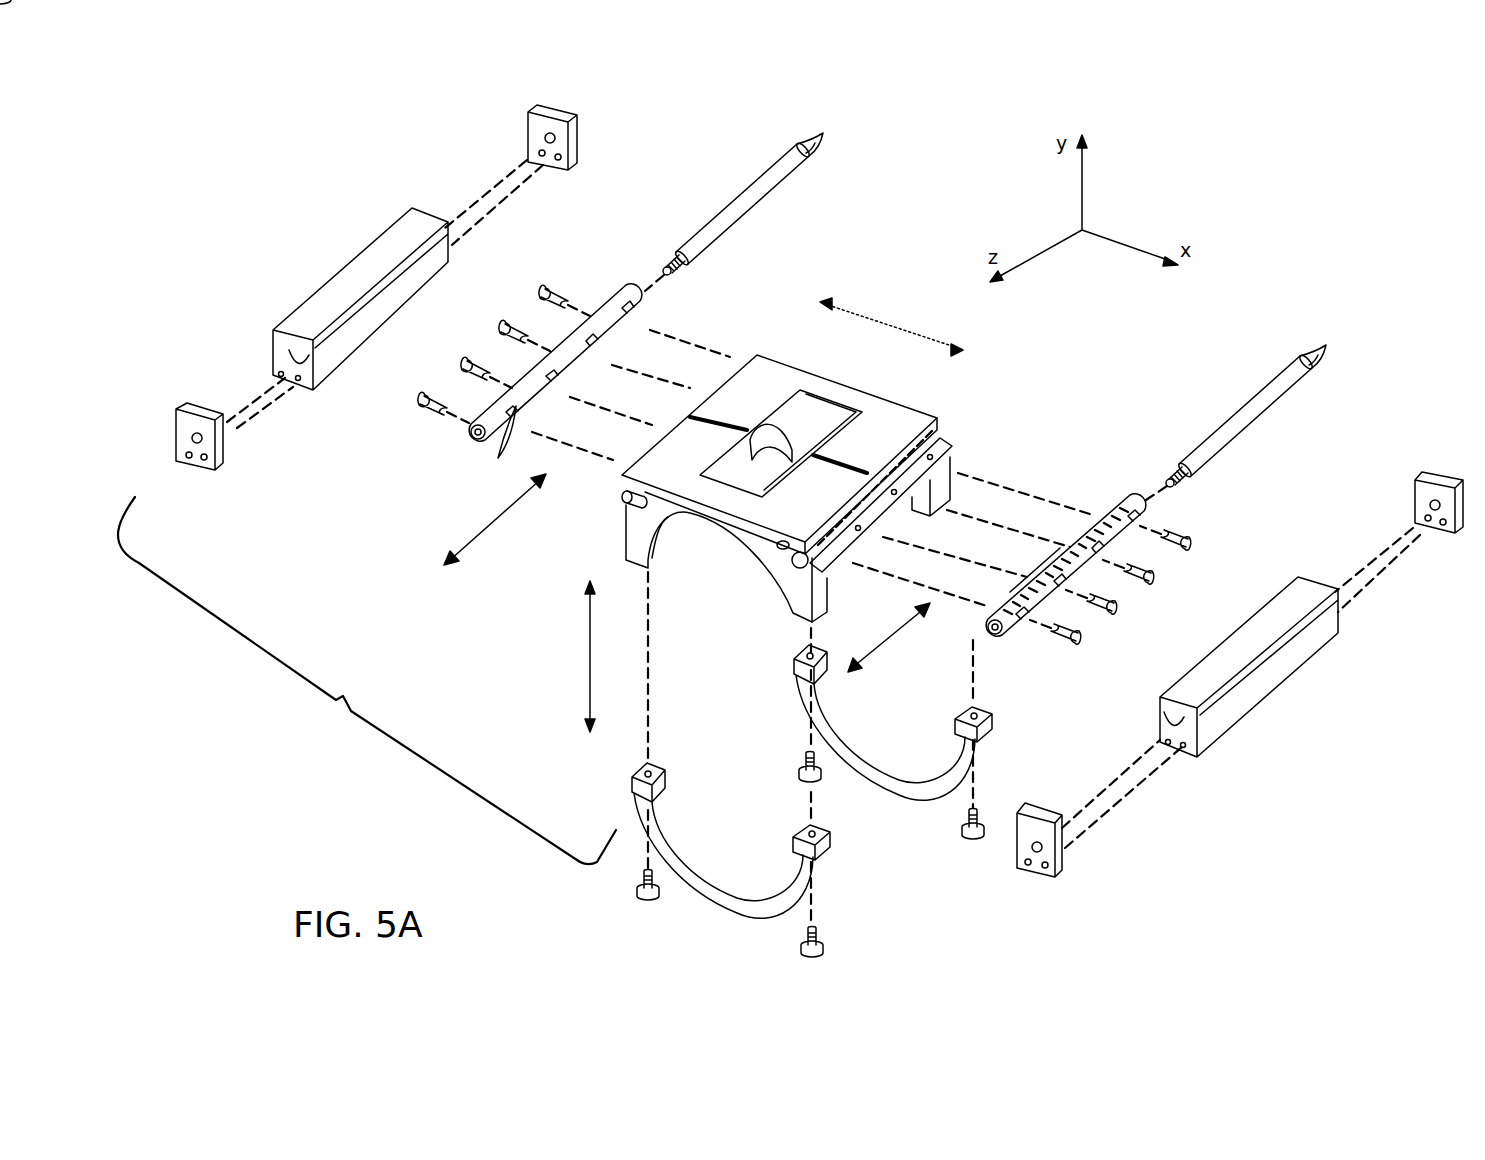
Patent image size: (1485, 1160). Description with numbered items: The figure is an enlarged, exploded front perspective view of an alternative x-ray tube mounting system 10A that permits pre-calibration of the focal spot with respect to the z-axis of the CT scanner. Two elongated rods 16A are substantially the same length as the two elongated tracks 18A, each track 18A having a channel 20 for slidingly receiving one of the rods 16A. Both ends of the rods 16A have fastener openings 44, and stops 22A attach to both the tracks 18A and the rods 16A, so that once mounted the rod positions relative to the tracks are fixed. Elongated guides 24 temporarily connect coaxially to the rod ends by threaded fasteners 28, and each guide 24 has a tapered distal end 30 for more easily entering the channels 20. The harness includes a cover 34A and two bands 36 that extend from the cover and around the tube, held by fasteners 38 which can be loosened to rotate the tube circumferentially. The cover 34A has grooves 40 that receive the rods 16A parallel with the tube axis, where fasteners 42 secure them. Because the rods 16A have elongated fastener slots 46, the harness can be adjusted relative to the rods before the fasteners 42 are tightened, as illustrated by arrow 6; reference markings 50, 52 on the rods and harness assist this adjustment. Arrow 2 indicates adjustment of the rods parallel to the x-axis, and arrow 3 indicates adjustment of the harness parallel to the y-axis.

The mounting system 10A is at (367, 680).
The rods 16A is at (1133, 503).
The tracks 18A is at (1285, 665).
The channel 20 is at (1170, 715).
The stops 22A is at (1025, 878).
The guides 24 is at (1255, 398).
The threaded fasteners 28 is at (1170, 476).
The tapered distal end 30 is at (1325, 352).
The cover 34A is at (893, 425).
The bands 36 is at (725, 920).
The fasteners 38 is at (825, 940).
The grooves 40 is at (624, 494).
The fasteners 42 is at (417, 400).
The fastener openings 44 is at (988, 627).
The elongated fastener slots 46 is at (512, 420).
The reference markings 50 is at (1008, 592).
The reference markings 52 is at (940, 430).
The arrow 2 is at (883, 322).
The arrow 3 is at (590, 665).
The arrow 6 is at (687, 573).